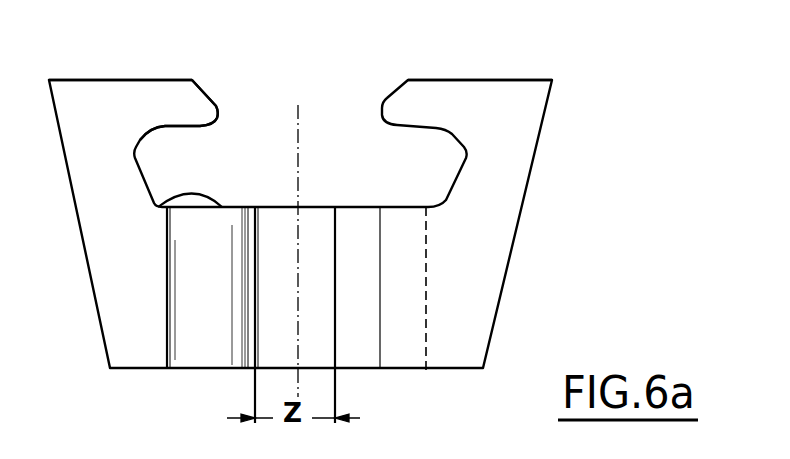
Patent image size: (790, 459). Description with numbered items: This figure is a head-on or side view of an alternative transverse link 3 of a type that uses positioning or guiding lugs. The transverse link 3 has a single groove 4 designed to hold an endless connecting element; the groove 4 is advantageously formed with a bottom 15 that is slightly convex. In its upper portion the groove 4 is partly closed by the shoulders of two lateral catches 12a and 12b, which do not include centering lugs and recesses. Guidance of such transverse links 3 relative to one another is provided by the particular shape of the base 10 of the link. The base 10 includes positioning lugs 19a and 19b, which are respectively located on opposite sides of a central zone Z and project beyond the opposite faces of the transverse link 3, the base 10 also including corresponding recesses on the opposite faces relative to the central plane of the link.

The transverse link 3 is at (520, 225).
The groove 4 is at (327, 173).
The base 10 is at (197, 107).
The lateral catch 12a is at (104, 106).
The lateral catch 12b is at (470, 102).
The bottom 15 is at (158, 207).
The positioning lug 19a is at (200, 338).
The positioning lug 19b is at (402, 338).